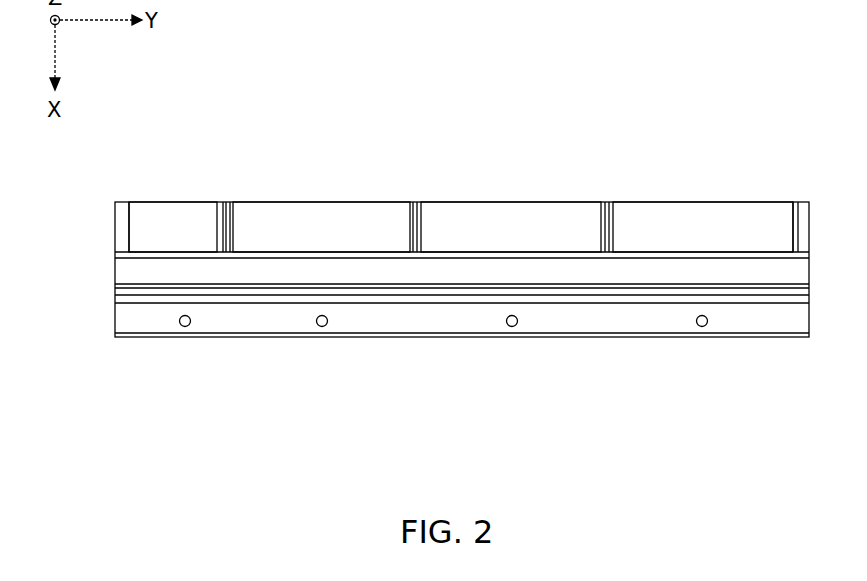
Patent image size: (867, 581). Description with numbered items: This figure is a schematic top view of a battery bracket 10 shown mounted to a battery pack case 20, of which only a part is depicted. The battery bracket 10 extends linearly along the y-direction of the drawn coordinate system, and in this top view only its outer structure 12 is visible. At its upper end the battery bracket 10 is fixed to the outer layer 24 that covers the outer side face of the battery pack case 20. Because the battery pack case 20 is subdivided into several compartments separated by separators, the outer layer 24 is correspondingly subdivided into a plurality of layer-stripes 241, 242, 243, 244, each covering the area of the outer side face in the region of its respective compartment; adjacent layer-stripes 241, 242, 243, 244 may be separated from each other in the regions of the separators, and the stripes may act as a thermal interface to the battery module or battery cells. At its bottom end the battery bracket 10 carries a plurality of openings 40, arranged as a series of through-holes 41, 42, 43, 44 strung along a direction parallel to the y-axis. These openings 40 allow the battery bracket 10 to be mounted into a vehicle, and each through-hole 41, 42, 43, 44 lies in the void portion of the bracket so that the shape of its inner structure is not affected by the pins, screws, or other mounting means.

The battery bracket 10 is at (444, 301).
The outer structure 12 is at (462, 293).
The battery pack case 20 is at (120, 226).
The outer layer 24 is at (461, 165).
The layer-stripe 241 is at (171, 222).
The layer-stripe 242 is at (315, 222).
The layer-stripe 243 is at (514, 222).
The layer-stripe 244 is at (703, 201).
The plurality of openings 40 is at (470, 378).
The through-hole 41 is at (186, 327).
The through-hole 42 is at (323, 327).
The through-hole 43 is at (513, 327).
The through-hole 44 is at (718, 349).